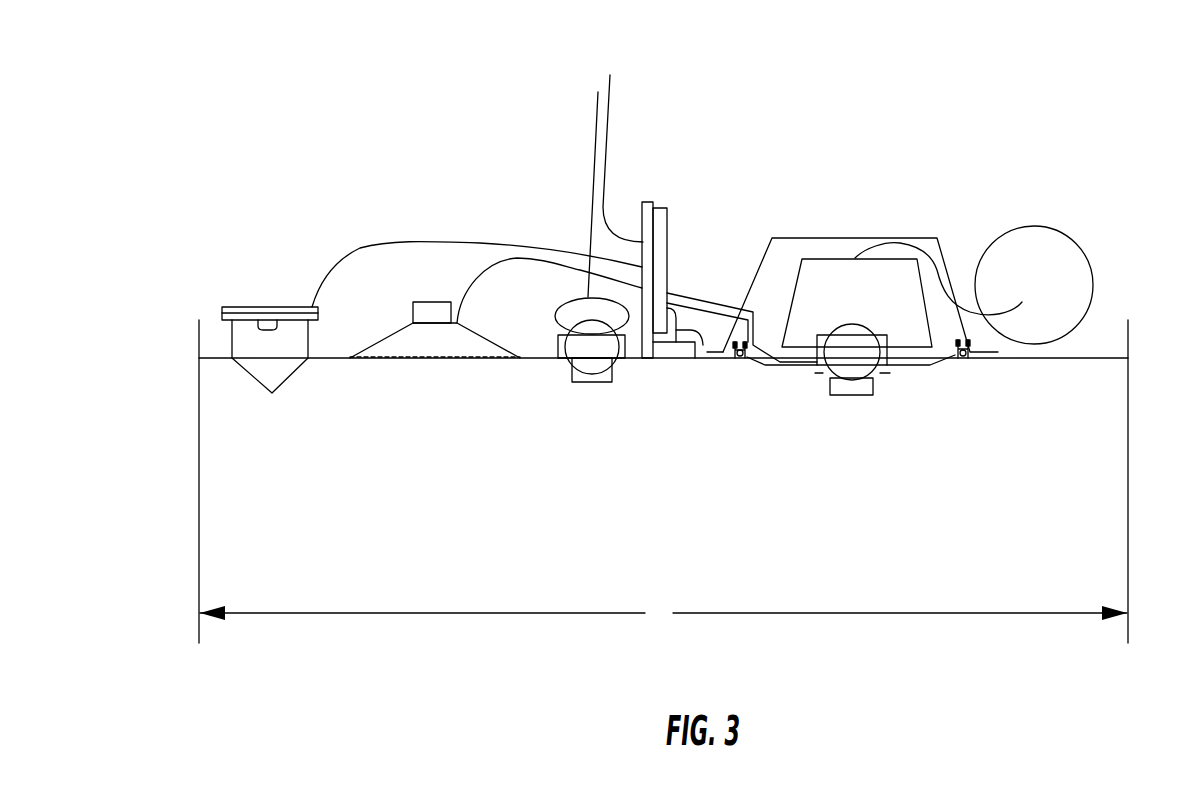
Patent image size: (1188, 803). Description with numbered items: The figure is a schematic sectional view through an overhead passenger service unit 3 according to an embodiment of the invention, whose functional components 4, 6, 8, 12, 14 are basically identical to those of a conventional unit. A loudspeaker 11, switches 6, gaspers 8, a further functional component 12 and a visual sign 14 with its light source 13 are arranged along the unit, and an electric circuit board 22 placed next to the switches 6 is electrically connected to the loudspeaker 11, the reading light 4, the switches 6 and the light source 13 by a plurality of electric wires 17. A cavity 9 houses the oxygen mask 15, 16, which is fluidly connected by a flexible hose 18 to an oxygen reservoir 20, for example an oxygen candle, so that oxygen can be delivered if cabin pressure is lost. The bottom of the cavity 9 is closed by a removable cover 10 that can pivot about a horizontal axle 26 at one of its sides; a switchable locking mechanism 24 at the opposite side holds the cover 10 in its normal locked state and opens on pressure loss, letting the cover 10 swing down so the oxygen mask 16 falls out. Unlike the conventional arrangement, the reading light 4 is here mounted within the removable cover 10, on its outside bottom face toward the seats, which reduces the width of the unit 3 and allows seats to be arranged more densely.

The mobile fluid delivery system 3 is at (1130, 78).
The reading light 4 is at (851, 426).
The switches 6 is at (680, 360).
The gaspers 8 is at (581, 425).
The cavity 9 is at (885, 195).
The removable cover 10 is at (920, 368).
The loudspeaker 11 is at (395, 343).
The functional component 12 is at (433, 383).
The light source 13 is at (267, 320).
The visual sign 14 is at (278, 385).
The oxygen mask 15 is at (290, 373).
The oxygen mask 16 is at (828, 278).
The electric wires 17 is at (245, 307).
The flexible hose 18 is at (920, 248).
The oxygen reservoir 20 is at (1107, 218).
The electric circuit board 22 is at (697, 190).
The switchable locking mechanism 24 is at (962, 360).
The axle 26 is at (745, 360).